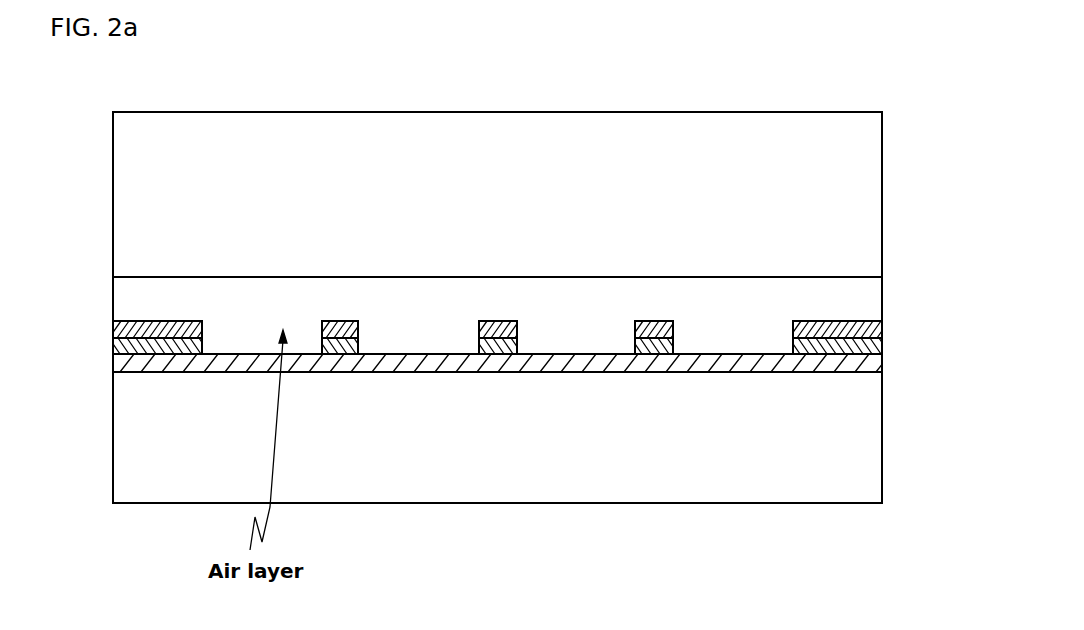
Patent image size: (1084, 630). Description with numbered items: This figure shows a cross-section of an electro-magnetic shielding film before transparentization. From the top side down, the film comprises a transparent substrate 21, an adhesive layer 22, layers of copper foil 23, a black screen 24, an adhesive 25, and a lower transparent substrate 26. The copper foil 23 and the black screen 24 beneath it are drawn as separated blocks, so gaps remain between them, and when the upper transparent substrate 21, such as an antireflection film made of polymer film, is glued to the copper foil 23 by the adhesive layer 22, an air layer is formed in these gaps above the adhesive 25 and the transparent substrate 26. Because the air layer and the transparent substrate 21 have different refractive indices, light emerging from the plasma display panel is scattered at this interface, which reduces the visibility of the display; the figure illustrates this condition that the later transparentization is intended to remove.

The transparent substrate 21 is at (858, 181).
The adhesive layer 22 is at (866, 298).
The layers of copper foil 23 is at (880, 327).
The black screen 24 is at (873, 347).
The adhesive 25 is at (870, 365).
The transparent substrate 26 is at (858, 438).